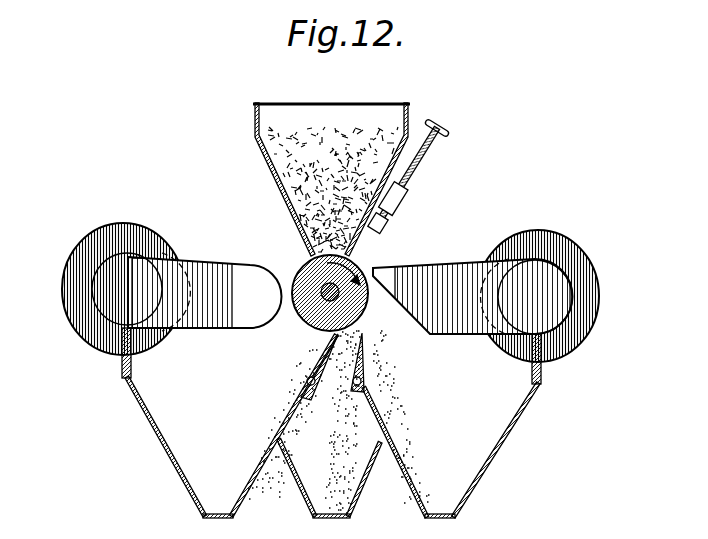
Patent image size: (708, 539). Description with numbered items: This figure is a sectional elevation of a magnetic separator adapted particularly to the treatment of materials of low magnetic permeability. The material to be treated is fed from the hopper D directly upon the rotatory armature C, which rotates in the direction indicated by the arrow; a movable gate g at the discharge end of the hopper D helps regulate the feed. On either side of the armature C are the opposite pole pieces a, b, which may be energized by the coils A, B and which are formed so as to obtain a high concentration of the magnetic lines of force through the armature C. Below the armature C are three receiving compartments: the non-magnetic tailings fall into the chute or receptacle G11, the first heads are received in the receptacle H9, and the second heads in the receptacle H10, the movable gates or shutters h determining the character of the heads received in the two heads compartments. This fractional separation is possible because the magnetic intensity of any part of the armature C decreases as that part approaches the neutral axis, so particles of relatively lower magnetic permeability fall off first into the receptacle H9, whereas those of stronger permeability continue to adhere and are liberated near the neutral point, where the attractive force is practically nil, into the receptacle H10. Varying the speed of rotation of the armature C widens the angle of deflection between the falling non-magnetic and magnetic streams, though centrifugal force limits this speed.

The hopper D is at (251, 132).
The movable gate g is at (366, 236).
The rotatory armature C is at (303, 264).
The coil A is at (58, 281).
The pole piece a is at (187, 292).
The coil B is at (603, 297).
The pole piece b is at (473, 297).
The adjustable wing or gate h is at (316, 357).
The receptacle H10 is at (231, 426).
The receptacle H9 is at (329, 467).
The chute or receptacle G11 is at (451, 450).